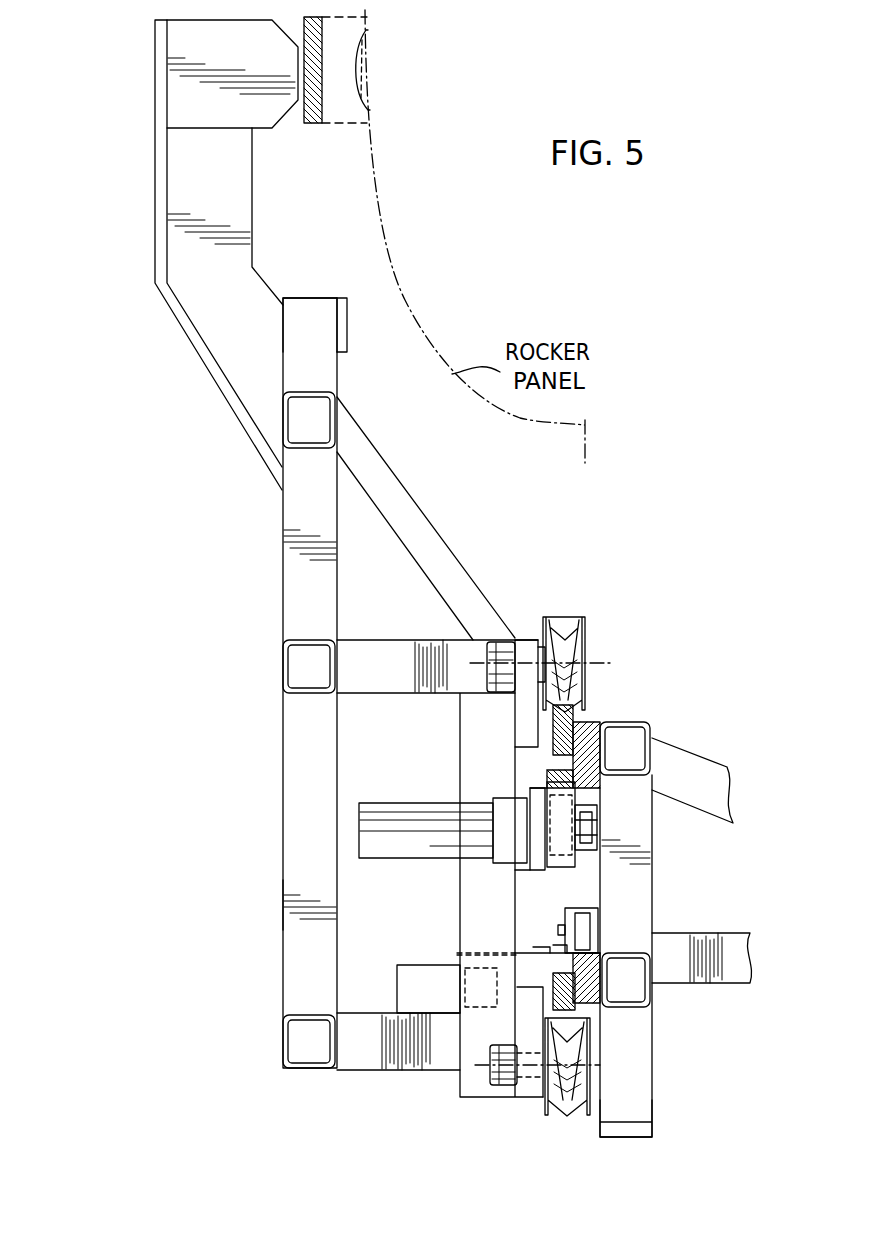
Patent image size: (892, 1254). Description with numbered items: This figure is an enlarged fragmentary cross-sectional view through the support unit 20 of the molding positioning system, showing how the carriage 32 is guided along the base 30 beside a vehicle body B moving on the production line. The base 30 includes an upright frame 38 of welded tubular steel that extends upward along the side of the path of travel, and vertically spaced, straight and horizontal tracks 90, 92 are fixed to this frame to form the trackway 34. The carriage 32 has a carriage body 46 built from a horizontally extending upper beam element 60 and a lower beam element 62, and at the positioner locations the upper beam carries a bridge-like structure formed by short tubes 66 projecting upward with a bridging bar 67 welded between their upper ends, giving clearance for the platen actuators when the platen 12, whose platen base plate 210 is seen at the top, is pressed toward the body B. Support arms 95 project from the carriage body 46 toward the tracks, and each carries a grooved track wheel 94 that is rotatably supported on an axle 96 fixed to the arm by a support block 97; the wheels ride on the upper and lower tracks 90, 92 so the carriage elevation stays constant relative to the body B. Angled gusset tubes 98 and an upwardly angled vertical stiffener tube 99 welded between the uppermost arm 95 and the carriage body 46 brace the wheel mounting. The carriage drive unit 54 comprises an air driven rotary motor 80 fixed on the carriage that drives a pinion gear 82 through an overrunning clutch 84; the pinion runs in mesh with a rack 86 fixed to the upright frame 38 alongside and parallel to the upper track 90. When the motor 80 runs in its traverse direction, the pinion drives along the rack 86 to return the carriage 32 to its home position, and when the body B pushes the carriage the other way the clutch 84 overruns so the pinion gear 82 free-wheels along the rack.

The platen 12 is at (152, 65).
The platen base plate 210 is at (322, 80).
The vehicle body B is at (392, 255).
The short tubes 66 is at (307, 307).
The bridging bar 67 is at (345, 340).
The upper beam element 60 is at (320, 392).
The carriage body 46 is at (300, 712).
The lower beam element 62 is at (283, 1040).
The support unit 20 is at (283, 810).
The carriage 32 is at (283, 912).
The vertical stiffener tube 99 is at (417, 523).
The angled gusset tubes 98 is at (353, 648).
The support arm 95 is at (418, 642).
The support block 97 is at (522, 720).
The axle 96 is at (505, 642).
The track wheels 94 is at (575, 650).
The trackway 34 is at (585, 720).
The upper track 90 is at (630, 740).
The upright frame 38 is at (628, 910).
The lower track 92 is at (600, 1008).
The base 30 is at (613, 1070).
The carriage drive unit 54 is at (440, 862).
The air driven rotary motor 80 is at (400, 803).
The rack 86 is at (527, 778).
The overrunning clutch 84 is at (545, 870).
The pinion gear 82 is at (560, 850).